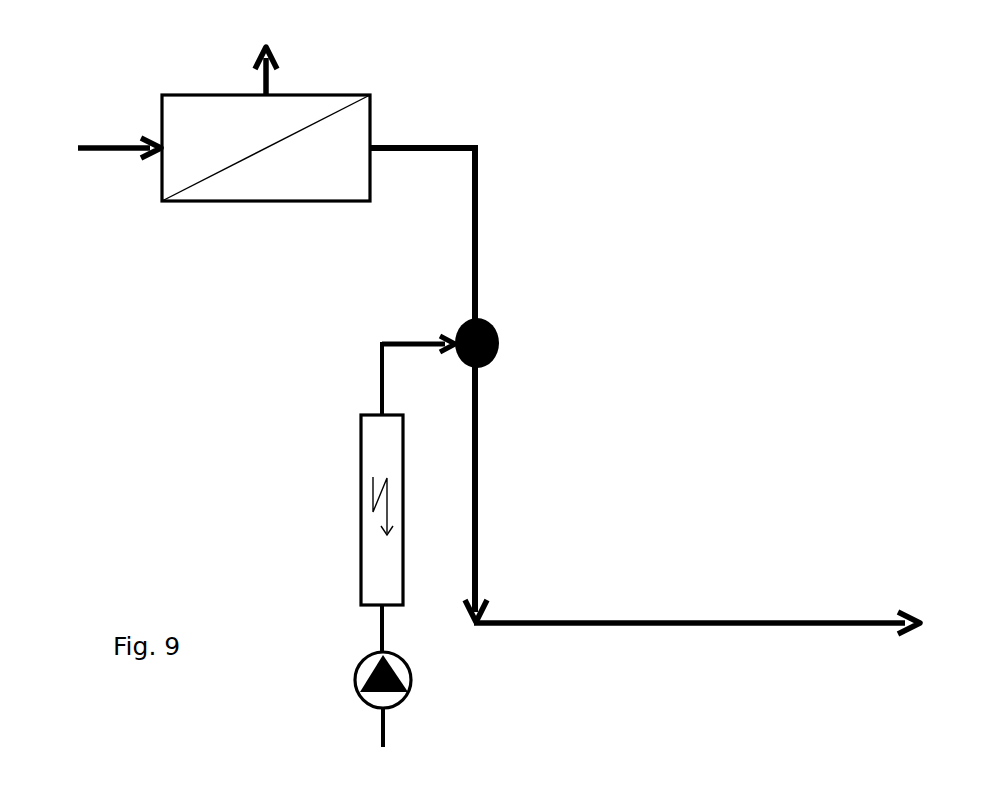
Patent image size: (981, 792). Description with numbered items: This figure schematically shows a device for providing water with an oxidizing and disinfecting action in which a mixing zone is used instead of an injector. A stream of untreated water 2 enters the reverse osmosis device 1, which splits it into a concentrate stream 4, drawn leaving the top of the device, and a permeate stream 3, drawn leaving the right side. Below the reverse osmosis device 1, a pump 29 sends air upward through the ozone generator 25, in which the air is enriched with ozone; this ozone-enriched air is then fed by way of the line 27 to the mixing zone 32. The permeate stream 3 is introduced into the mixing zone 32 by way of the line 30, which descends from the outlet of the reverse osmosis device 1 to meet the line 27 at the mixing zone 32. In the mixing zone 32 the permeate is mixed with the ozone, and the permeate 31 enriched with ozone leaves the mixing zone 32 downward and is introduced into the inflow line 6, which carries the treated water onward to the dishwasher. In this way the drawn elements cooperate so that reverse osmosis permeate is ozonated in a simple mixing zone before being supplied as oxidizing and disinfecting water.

The reverse osmosis device 1 is at (202, 91).
The stream of untreated water 2 is at (118, 150).
The permeate stream 3 is at (397, 137).
The concentrate stream 4 is at (280, 63).
The line 6 is at (725, 620).
The ozone generator 25 is at (356, 448).
The line 27 is at (383, 340).
The pump 29 is at (415, 680).
The line 30 is at (480, 283).
The permeate enriched with ozone 31 is at (480, 432).
The mixing zone 32 is at (505, 338).